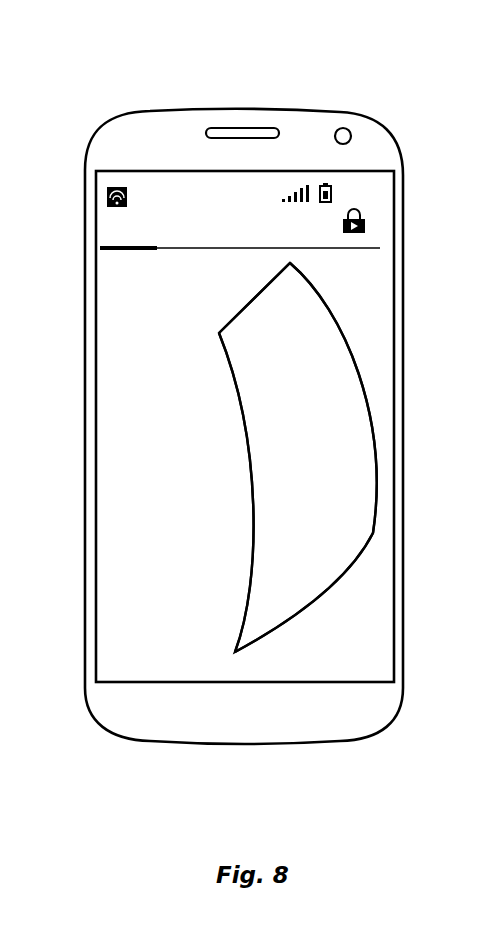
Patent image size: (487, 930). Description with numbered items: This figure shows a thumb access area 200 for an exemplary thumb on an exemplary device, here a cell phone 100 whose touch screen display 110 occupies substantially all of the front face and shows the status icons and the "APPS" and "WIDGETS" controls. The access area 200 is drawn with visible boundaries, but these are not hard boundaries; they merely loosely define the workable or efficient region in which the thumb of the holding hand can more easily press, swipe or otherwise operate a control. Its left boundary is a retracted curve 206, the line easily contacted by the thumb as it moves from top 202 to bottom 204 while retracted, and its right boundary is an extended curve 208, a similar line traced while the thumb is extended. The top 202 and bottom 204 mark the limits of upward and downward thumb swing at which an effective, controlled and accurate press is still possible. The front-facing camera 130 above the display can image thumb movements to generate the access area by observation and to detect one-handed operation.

The cell phone 100 is at (377, 107).
The display 110 is at (388, 193).
The front-facing camera 130 is at (351, 136).
The thumb access area 200 is at (329, 434).
The top 202 is at (240, 292).
The bottom 204 is at (331, 606).
The retracted curve 206 is at (242, 488).
The extended curve 208 is at (340, 294).